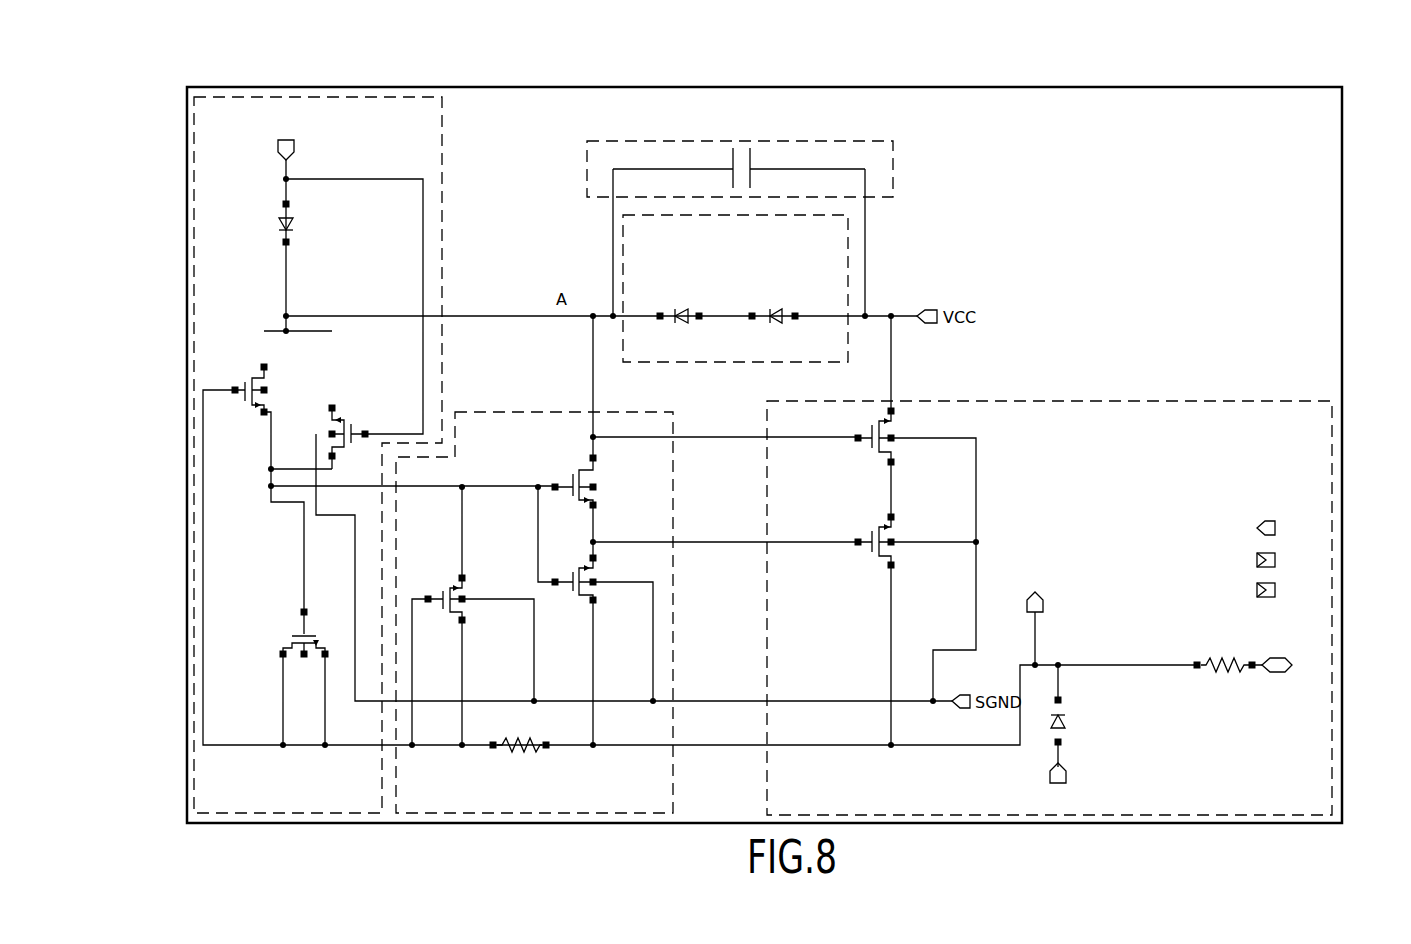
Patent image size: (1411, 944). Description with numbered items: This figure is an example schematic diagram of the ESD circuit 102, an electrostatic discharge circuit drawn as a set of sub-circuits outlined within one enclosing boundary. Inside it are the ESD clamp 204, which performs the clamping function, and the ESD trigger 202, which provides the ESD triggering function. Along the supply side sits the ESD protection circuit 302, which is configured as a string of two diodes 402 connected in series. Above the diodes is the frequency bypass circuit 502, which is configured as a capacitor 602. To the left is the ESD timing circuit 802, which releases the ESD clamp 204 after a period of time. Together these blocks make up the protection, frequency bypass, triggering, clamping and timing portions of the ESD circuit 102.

The ESD circuit 102 is at (1350, 190).
The ESD timing circuit 802 is at (442, 262).
The ESD trigger 202 is at (497, 411).
The ESD protection circuit 302 is at (848, 232).
The string of two diodes 402 is at (647, 333).
The frequency bypass circuit 502 is at (893, 170).
The capacitor 602 is at (707, 138).
The ESD clamp 204 is at (1153, 400).